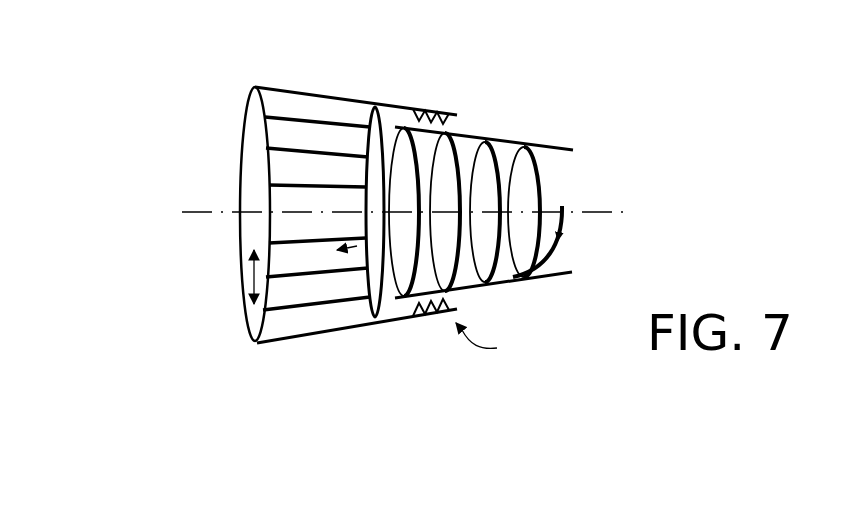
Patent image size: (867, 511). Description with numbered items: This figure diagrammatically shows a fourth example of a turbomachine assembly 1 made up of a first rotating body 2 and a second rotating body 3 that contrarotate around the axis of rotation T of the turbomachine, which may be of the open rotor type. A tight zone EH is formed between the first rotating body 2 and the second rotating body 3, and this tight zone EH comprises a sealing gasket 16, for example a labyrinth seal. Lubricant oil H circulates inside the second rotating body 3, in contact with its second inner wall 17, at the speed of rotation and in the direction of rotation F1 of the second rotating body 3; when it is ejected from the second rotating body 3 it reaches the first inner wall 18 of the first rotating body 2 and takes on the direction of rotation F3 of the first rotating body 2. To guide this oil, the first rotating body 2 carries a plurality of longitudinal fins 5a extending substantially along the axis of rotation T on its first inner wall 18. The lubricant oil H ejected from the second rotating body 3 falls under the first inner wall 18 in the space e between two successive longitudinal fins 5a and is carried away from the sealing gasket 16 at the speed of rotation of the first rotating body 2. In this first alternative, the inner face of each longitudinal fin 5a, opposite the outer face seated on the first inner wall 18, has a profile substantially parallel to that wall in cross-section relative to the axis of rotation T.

The assembly 1 is at (156, 186).
The first rotating body 2 is at (272, 88).
The second rotating body 3 is at (572, 152).
The longitudinal fins 5a is at (316, 150).
The sealing gasket 16 is at (458, 115).
The second inner wall 17 is at (572, 272).
The first inner wall 18 is at (284, 96).
The lubricant oil H is at (496, 158).
The axis of rotation T is at (620, 209).
The direction of rotation of the second rotating body F1 is at (562, 240).
The direction of rotation of the first rotating body F3 is at (336, 254).
The space e is at (243, 277).
The tight zone EH is at (493, 346).